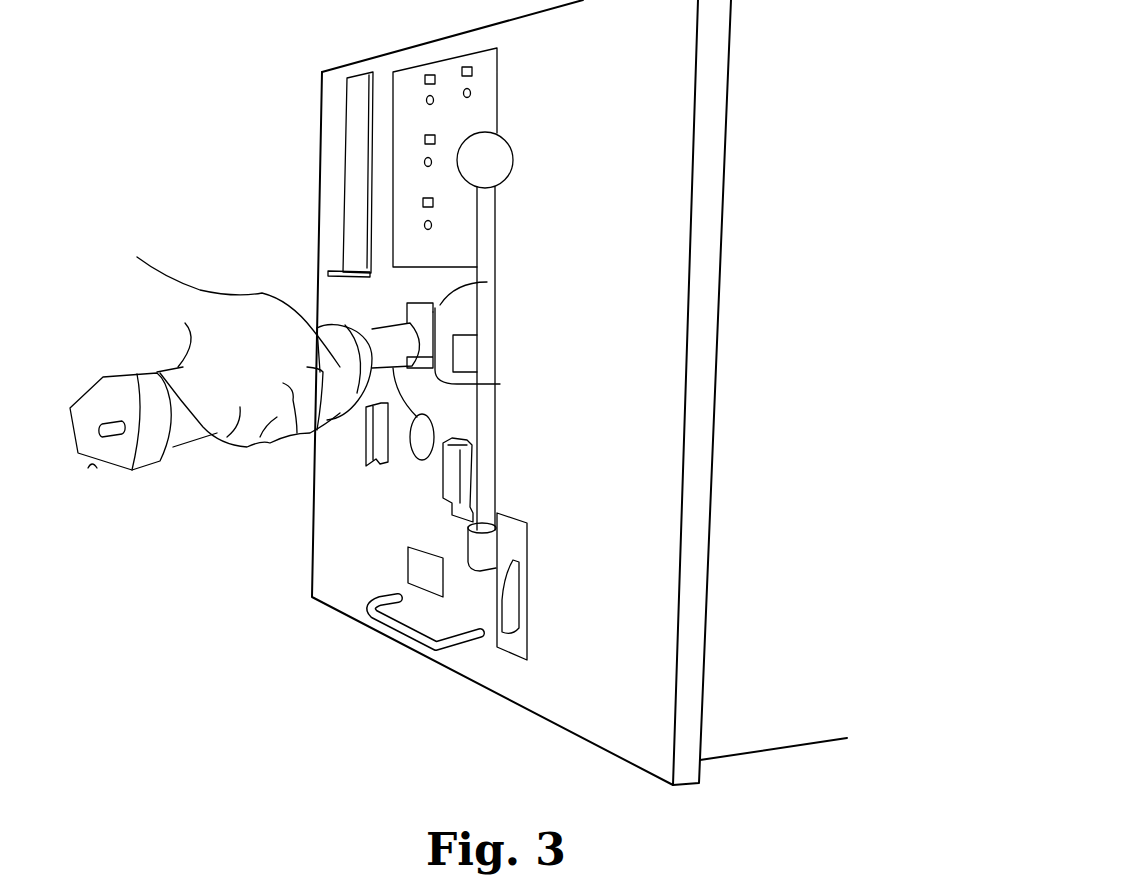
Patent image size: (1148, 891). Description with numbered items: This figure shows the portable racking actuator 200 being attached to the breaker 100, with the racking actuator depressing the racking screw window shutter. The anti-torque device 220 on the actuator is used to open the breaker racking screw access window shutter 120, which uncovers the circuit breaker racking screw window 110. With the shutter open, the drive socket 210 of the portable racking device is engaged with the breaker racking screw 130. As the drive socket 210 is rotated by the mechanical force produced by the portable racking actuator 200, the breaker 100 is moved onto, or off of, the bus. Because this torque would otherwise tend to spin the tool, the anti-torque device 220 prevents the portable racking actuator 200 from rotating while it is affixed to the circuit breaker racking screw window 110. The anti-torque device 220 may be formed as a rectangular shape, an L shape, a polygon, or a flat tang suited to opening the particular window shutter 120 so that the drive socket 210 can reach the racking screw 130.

The breaker 100 is at (473, 698).
The circuit breaker racking screw window 110 is at (417, 298).
The breaker racking screw access window shutter 120 is at (500, 384).
The breaker racking screw 130 is at (487, 282).
The portable racking actuator 200 is at (185, 460).
The drive socket 210 is at (413, 323).
The anti-torque device 220 is at (433, 425).